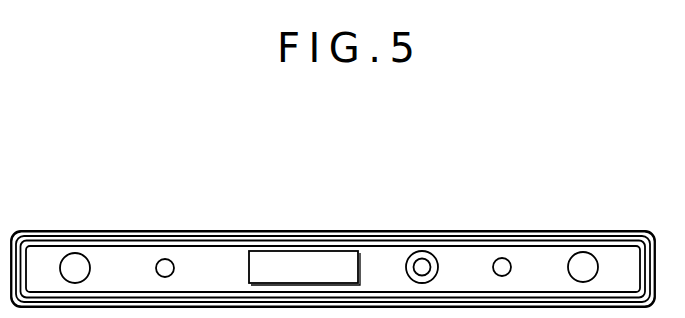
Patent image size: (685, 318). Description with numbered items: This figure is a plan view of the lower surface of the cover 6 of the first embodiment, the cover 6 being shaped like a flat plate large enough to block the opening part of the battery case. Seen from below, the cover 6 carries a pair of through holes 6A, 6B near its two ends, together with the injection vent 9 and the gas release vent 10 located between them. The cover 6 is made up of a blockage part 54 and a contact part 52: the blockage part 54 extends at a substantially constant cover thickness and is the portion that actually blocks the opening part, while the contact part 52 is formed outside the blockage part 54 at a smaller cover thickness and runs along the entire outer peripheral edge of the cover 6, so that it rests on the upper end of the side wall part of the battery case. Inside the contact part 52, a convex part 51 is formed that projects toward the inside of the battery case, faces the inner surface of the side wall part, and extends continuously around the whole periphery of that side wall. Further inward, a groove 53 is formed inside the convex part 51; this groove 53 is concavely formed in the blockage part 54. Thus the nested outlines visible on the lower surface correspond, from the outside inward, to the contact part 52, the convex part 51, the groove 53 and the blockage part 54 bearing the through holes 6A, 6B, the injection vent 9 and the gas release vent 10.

The cover 6 is at (533, 206).
The through hole 6A is at (77, 263).
The through hole 6B is at (584, 262).
The injection vent 9 is at (425, 258).
The gas release vent 10 is at (343, 260).
The convex part 51 is at (230, 240).
The contact part 52 is at (175, 230).
The groove 53 is at (290, 243).
The blockage part 54 is at (472, 257).